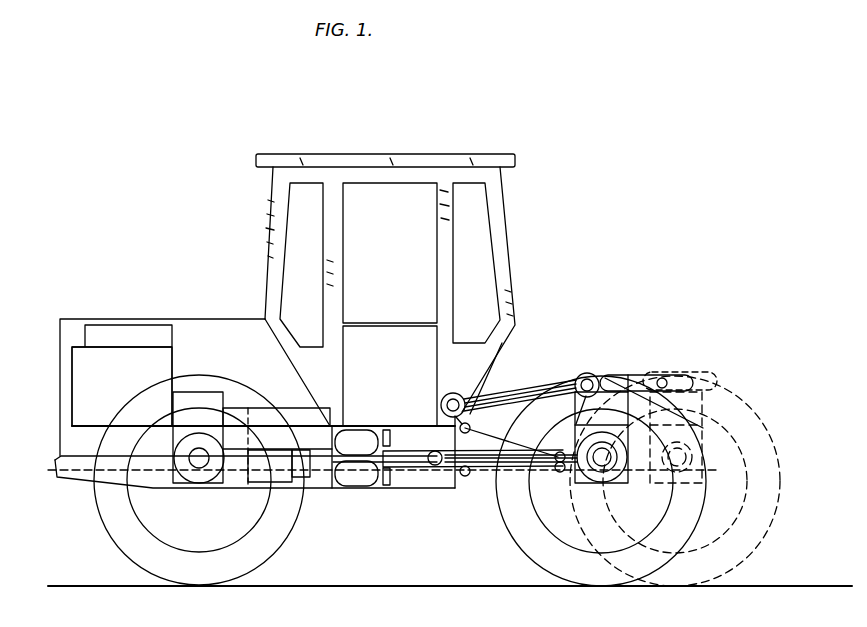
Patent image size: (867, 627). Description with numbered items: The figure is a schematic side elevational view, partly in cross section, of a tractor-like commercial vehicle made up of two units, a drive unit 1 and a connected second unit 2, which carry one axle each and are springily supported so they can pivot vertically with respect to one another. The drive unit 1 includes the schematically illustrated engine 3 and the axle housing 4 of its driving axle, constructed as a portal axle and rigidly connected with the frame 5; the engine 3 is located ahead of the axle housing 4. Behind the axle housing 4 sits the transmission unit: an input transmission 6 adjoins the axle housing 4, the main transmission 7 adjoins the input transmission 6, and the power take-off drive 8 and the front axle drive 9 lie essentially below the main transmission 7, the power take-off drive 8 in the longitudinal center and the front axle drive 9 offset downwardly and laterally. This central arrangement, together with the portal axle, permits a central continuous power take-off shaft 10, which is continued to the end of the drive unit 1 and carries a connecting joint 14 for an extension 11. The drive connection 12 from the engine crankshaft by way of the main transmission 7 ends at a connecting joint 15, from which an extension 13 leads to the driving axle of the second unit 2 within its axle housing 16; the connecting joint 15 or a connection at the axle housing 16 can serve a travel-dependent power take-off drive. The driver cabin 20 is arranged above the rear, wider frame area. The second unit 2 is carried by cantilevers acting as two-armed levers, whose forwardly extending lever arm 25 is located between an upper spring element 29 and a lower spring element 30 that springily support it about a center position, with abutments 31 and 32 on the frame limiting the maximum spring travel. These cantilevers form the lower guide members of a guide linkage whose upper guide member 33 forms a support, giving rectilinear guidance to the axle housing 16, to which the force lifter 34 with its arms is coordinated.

The drive unit 1 is at (187, 304).
The second unit 2 is at (680, 358).
The engine 3 is at (100, 392).
The axle housing 4 is at (195, 398).
The frame 5 is at (57, 452).
The input transmission 6 is at (236, 410).
The main transmission 7 is at (268, 416).
The power take-off drive 8 is at (279, 478).
The front axle drive 9 is at (314, 460).
The power take-off shaft 10 is at (82, 483).
The extension 11 is at (479, 478).
The drive connection 12 is at (380, 411).
The extension 13 is at (494, 412).
The connecting joint 14 is at (465, 477).
The connecting joint 15 is at (492, 385).
The axle housing 16 is at (630, 494).
The driver cabin 20 is at (535, 242).
The lever arm 25 is at (418, 470).
The upper spring element 29 is at (350, 437).
The lower spring element 30 is at (356, 478).
The abutment 31 is at (389, 432).
The abutment 32 is at (388, 481).
The upper guide member 33 is at (549, 371).
The force lifter 34 is at (610, 374).